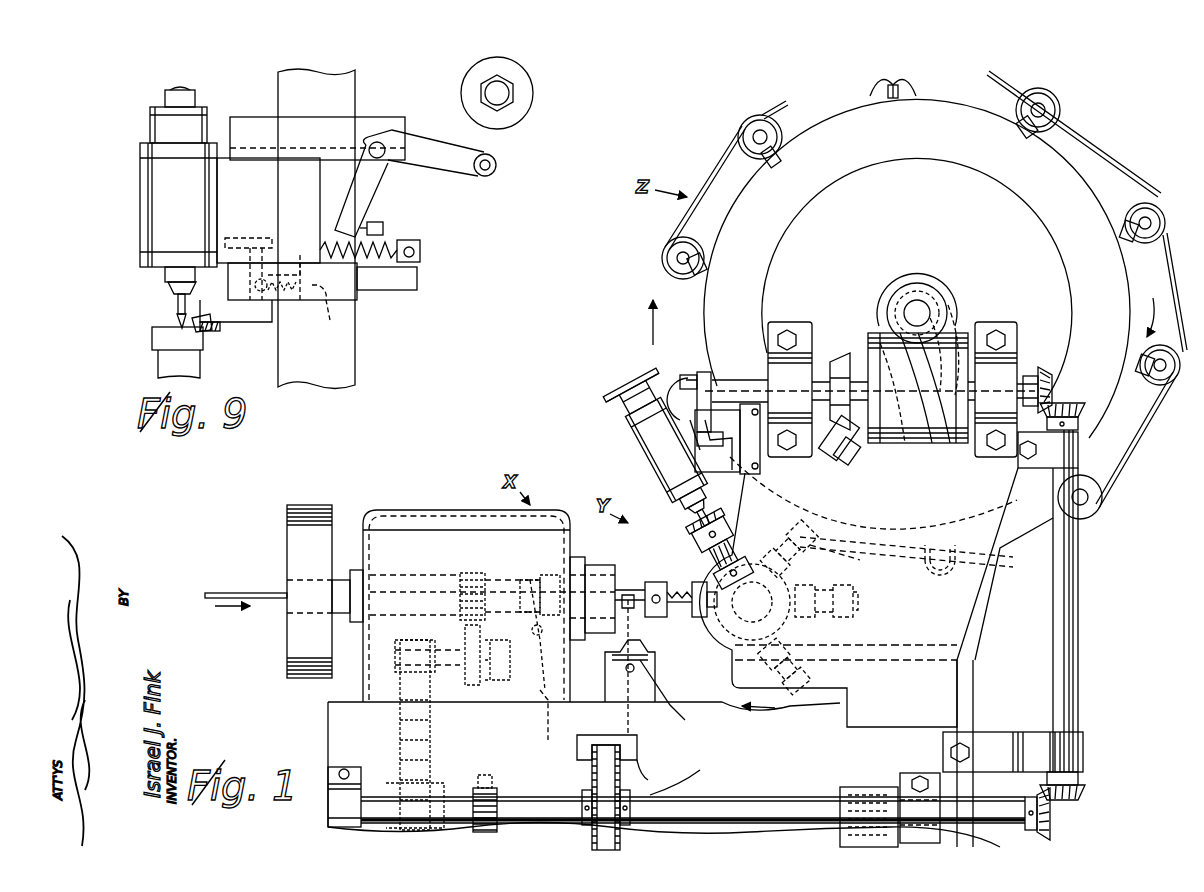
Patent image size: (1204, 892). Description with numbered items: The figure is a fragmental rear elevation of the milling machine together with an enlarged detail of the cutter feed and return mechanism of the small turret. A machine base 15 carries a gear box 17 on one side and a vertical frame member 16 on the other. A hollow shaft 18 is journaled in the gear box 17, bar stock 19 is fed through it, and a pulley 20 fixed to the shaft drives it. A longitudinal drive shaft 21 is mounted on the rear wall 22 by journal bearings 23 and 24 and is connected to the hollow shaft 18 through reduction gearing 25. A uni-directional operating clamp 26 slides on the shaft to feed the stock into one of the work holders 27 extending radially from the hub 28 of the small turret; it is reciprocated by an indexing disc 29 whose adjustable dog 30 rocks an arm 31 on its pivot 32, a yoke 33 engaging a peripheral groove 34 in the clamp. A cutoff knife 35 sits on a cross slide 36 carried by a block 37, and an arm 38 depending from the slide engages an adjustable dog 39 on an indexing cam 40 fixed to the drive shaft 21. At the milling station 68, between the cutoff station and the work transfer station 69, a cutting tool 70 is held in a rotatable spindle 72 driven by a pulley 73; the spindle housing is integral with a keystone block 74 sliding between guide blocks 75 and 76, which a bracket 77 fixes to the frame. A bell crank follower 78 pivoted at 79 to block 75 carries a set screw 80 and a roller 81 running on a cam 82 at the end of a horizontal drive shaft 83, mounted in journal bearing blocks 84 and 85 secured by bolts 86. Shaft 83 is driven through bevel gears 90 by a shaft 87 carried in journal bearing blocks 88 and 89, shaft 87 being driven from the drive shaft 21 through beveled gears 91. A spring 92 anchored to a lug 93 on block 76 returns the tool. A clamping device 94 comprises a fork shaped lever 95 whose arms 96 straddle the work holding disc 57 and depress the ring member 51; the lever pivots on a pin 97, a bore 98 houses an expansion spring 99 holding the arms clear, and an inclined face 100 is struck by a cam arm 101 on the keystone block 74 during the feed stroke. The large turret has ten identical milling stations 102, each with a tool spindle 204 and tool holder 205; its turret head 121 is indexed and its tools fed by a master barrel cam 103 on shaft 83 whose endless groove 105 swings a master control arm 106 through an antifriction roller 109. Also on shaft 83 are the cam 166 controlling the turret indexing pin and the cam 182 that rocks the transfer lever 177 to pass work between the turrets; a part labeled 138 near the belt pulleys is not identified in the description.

In FIG. 1, the machine base 15 is at (345, 722).
In FIG. 9, the frame member 16 is at (345, 353).
In FIG. 1, the frame member 16 is at (1070, 232).
In FIG. 1, the gear box 17 is at (395, 520).
In FIG. 1, the hollow shaft 18 is at (405, 590).
In FIG. 1, the bar stock 19 is at (230, 596).
In FIG. 1, the pulley 20 is at (313, 510).
In FIG. 1, the longitudinal drive shaft 21 is at (748, 810).
In FIG. 1, the rear wall 22 is at (836, 766).
In FIG. 1, the journal bearing 23 is at (340, 810).
In FIG. 1, the journal bearing 24 is at (908, 790).
In FIG. 1, the reduction gearing 25 is at (400, 675).
In FIG. 1, the uni-directional operating clamp 26 is at (578, 738).
In FIG. 9, the work holders 27 is at (168, 364).
In FIG. 1, the work holders 27 is at (858, 612).
In FIG. 1, the hub 28 is at (720, 615).
In FIG. 1, the indexing disc 29 is at (590, 781).
In FIG. 1, the adjustable dog 30 is at (590, 740).
In FIG. 1, the arm 31 is at (540, 712).
In FIG. 1, the pivot 32 is at (535, 640).
In FIG. 1, the yoke 33 is at (528, 572).
In FIG. 1, the peripheral groove 34 is at (510, 575).
In FIG. 1, the cutoff knife 35 is at (633, 593).
In FIG. 1, the cross slide 36 is at (650, 700).
In FIG. 1, the block 37 is at (608, 686).
In FIG. 1, the arm 38 is at (645, 728).
In FIG. 1, the adjustable dog 39 is at (642, 778).
In FIG. 1, the indexing cam 40 is at (650, 800).
In FIG. 9, the ring member 51 is at (160, 344).
In FIG. 9, the work holding disc 57 is at (200, 320).
In FIG. 9, the milling station 68 is at (114, 166).
In FIG. 1, the milling station 68 is at (652, 448).
In FIG. 1, the work transfer station 69 is at (825, 550).
In FIG. 9, the cutting tool 70 is at (175, 306).
In FIG. 1, the cutting tool 70 is at (675, 500).
In FIG. 9, the rotatable spindle 72 is at (157, 216).
In FIG. 1, the rotatable spindle 72 is at (653, 449).
In FIG. 1, the pulley 73 is at (620, 382).
In FIG. 9, the keystone block 74 is at (272, 203).
In FIG. 9, the guide block 75 is at (383, 128).
In FIG. 9, the guide block 76 is at (410, 284).
In FIG. 1, the bracket 77 is at (755, 472).
In FIG. 9, the bell crank follower 78 is at (427, 160).
In FIG. 1, the bell crank follower 78 is at (690, 420).
In FIG. 9, the pivot 79 is at (384, 148).
In FIG. 9, the set screw 80 is at (384, 228).
In FIG. 9, the roller 81 is at (497, 170).
In FIG. 9, the cam 82 is at (522, 107).
In FIG. 1, the cam 82 is at (700, 378).
In FIG. 1, the horizontal drive shaft 83 is at (733, 378).
In FIG. 1, the journal bearing block 84 is at (790, 320).
In FIG. 1, the journal bearing block 85 is at (1010, 322).
In FIG. 1, the bolts 86 is at (800, 338).
In FIG. 1, the shaft 87 is at (1078, 614).
In FIG. 1, the journal bearing block 88 is at (1085, 450).
In FIG. 1, the journal bearing block 89 is at (1083, 755).
In FIG. 1, the bevel gears 90 is at (1058, 410).
In FIG. 1, the beveled gears 91 is at (1055, 815).
In FIG. 9, the spring 92 is at (422, 252).
In FIG. 9, the lug 93 is at (412, 241).
In FIG. 9, the clamping device 94 is at (258, 345).
In FIG. 9, the fork shaped lever 95 is at (250, 320).
In FIG. 1, the fork shaped lever 95 is at (752, 474).
In FIG. 9, the arms 96 is at (212, 332).
In FIG. 1, the arms 96 is at (683, 511).
In FIG. 9, the pin 97 is at (270, 300).
In FIG. 9, the bore 98 is at (327, 311).
In FIG. 9, the expansion spring 99 is at (290, 270).
In FIG. 9, the inclined face 100 is at (275, 245).
In FIG. 9, the cam arm 101 is at (258, 240).
In FIG. 1, the cam arm 101 is at (629, 442).
In FIG. 1, the milling stations 102 is at (738, 157).
In FIG. 1, the master barrel cam 103 is at (960, 295).
In FIG. 1, the endless groove 105 is at (905, 443).
In FIG. 1, the master control arm 106 is at (898, 330).
In FIG. 1, the antifriction roller 109 is at (965, 335).
In FIG. 1, the turret head 121 is at (1040, 170).
In FIG. 1, the pulley 138 is at (759, 130).
In FIG. 1, the cam 166 is at (880, 443).
In FIG. 1, the transfer lever 177 is at (852, 462).
In FIG. 1, the cam 182 is at (840, 358).
In FIG. 1, the tool spindle 204 is at (1160, 223).
In FIG. 1, the tool holder 205 is at (1142, 203).